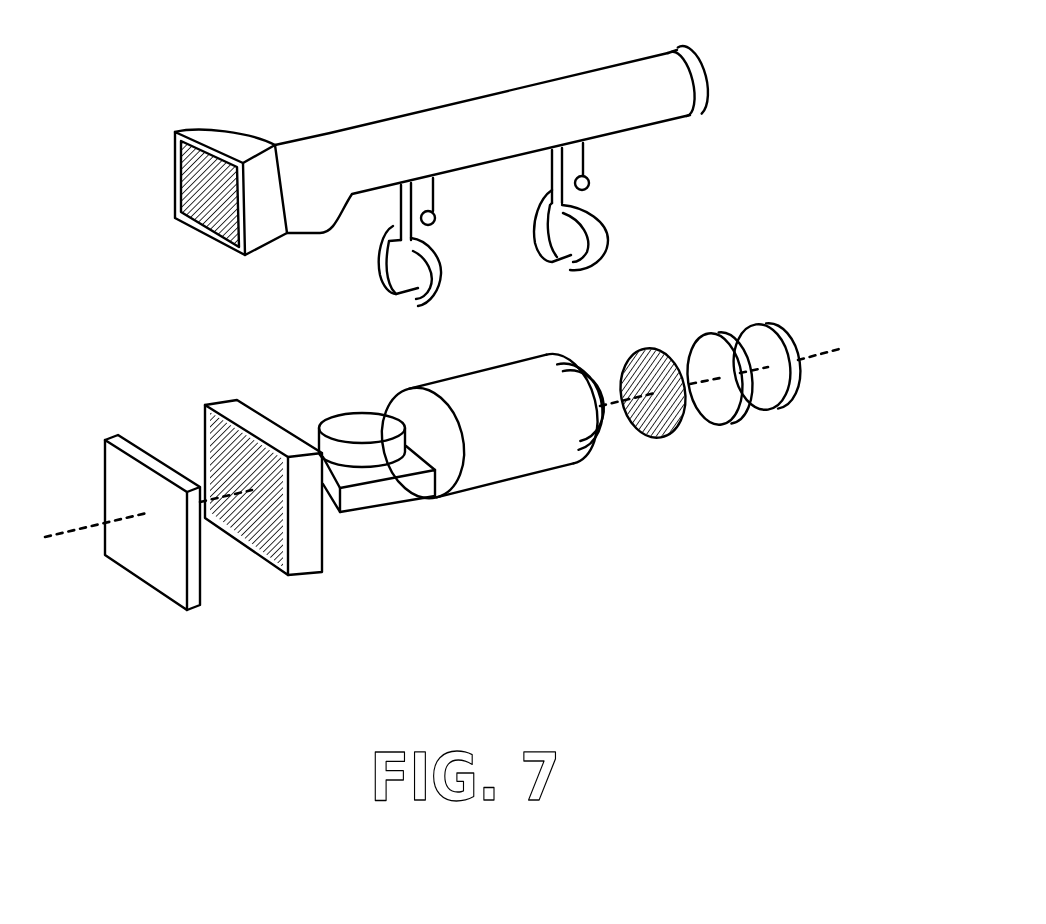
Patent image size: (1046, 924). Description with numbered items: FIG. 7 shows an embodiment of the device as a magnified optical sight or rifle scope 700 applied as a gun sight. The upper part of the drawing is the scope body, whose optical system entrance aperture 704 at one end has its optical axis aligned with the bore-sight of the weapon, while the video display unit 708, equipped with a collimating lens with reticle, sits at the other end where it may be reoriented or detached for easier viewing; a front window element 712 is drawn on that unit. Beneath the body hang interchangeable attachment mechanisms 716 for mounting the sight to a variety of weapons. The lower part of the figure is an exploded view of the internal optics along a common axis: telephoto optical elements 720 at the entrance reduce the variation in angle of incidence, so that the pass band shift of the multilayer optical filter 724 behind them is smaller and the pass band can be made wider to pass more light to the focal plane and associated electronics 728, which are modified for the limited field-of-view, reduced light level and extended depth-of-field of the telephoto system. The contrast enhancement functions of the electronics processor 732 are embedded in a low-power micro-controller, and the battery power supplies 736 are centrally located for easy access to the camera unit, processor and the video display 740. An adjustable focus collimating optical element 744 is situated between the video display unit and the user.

The rifle scope 700 is at (443, 120).
The optical system entrance aperture 704 is at (705, 63).
The video display unit 708 is at (243, 132).
The front window 712 is at (174, 172).
The interchangeable attachment mechanisms 716 is at (553, 258).
The telephoto optical elements 720 is at (792, 417).
The multilayer optical filter 724 is at (667, 437).
The focal plane and associated electronics 728 is at (517, 483).
The electronics processor 732 is at (392, 503).
The battery power supplies 736 is at (330, 422).
The video display 740 is at (258, 553).
The adjustable focus collimating optical element 744 is at (147, 585).